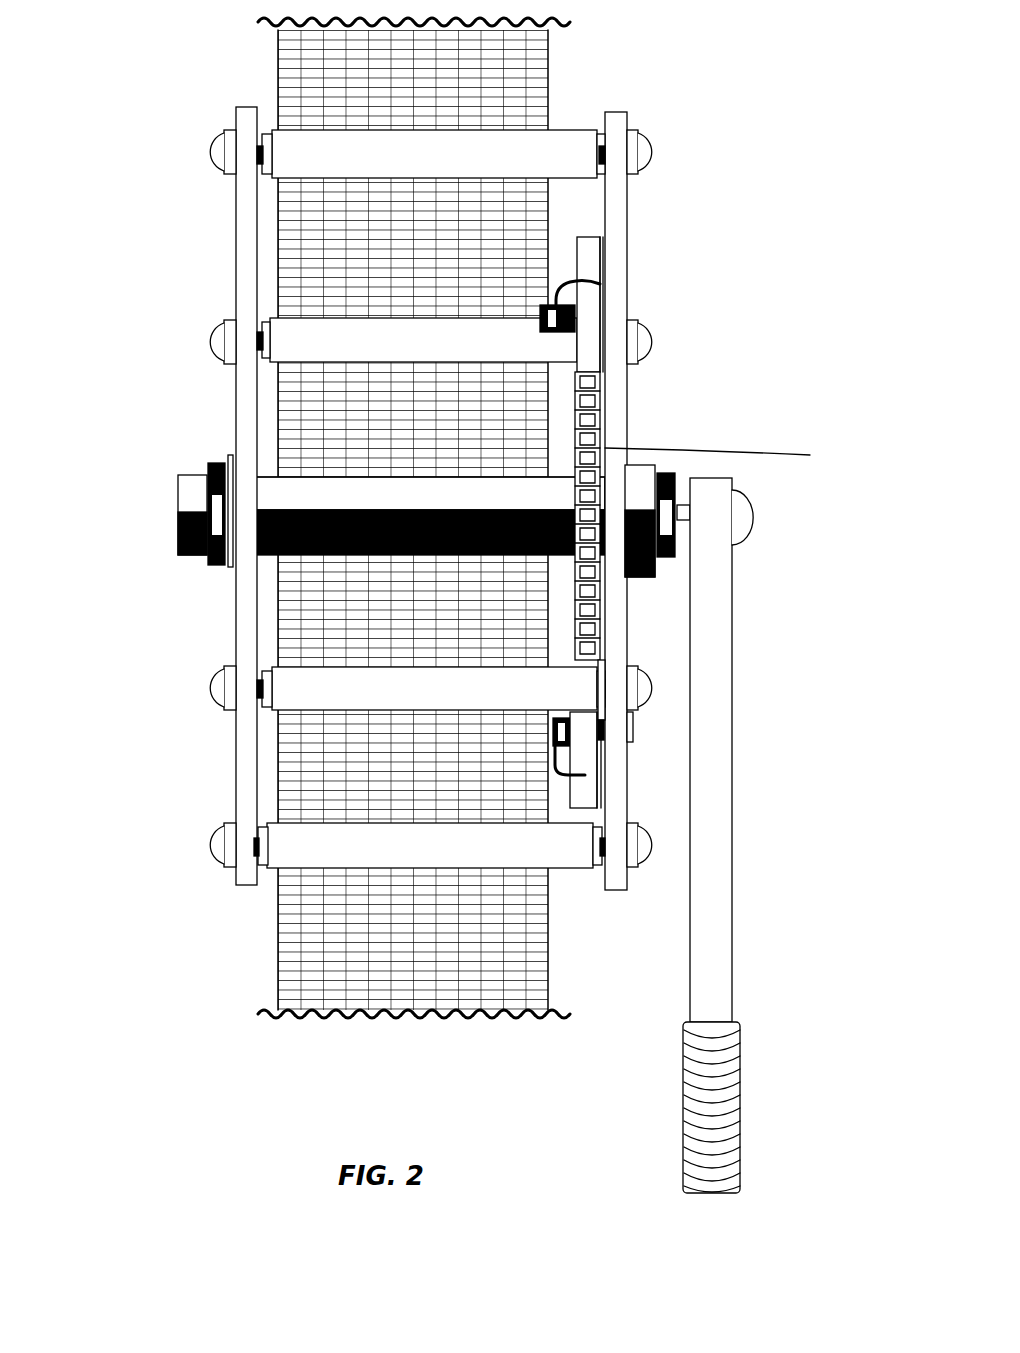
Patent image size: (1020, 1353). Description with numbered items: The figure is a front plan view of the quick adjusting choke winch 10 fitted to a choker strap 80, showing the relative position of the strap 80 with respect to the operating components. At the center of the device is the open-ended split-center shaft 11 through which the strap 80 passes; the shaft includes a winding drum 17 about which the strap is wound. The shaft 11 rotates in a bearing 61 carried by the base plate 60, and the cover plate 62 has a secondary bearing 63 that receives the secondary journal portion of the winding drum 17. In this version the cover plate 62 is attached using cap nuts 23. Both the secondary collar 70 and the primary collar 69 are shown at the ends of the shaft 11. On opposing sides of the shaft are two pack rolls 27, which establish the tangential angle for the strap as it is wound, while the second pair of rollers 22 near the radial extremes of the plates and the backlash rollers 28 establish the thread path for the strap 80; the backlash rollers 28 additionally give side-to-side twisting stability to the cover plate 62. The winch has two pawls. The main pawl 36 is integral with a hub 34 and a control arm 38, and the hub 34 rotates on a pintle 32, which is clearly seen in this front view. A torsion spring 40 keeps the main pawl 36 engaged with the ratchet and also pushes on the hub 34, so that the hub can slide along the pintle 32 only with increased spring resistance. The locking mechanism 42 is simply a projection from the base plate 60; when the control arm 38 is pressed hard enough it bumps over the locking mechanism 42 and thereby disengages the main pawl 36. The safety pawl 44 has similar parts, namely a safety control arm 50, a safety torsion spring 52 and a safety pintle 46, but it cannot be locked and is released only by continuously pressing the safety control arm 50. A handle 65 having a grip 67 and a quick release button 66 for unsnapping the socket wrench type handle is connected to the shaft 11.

The quick adjusting choke winch 10 is at (128, 338).
The open-ended split-center shaft 11 is at (255, 542).
The winding drum 17 is at (360, 508).
The second pair of rollers 22 is at (478, 142).
The cap nuts 23 is at (228, 158).
The pack roll 27 is at (470, 342).
The backlash rollers 28 is at (462, 688).
The pintle 32 is at (600, 740).
The hub 34 is at (600, 722).
The main pawl 36 is at (597, 663).
The control arm 38 is at (600, 807).
The torsion spring 40 is at (600, 768).
The locking mechanism 42 is at (600, 778).
The safety pawl 44 is at (590, 370).
The safety pintle 46 is at (580, 310).
The safety control arm 50 is at (590, 252).
The safety torsion spring 52 is at (603, 280).
The base plate 60 is at (627, 215).
The bearing 61 is at (655, 565).
The cover plate 62 is at (242, 608).
The secondary bearing 63 is at (232, 455).
The handle 65 is at (706, 980).
The quick release button 66 is at (746, 512).
The grip 67 is at (718, 1118).
The primary collar 69 is at (680, 535).
The secondary collar 70 is at (208, 470).
The choker strap 80 is at (575, 27).